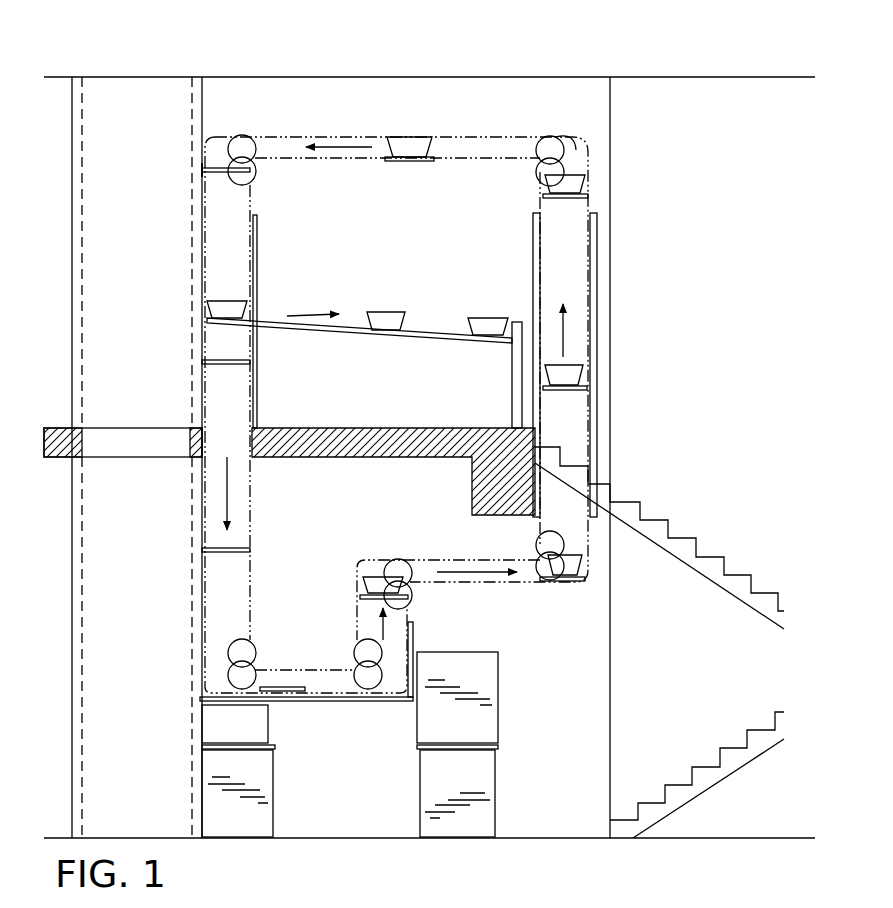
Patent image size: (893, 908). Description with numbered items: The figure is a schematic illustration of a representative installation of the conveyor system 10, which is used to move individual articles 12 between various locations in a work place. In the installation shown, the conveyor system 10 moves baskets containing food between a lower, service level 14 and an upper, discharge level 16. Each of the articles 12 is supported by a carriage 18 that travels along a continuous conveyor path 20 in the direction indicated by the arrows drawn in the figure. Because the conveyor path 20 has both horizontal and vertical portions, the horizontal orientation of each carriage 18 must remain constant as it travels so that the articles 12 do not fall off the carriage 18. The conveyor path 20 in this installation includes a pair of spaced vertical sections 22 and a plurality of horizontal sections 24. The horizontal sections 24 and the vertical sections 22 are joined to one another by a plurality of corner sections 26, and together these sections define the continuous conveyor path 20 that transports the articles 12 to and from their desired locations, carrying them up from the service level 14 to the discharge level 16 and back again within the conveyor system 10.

The conveyor system 10 is at (630, 322).
The articles 12 is at (405, 145).
The service level 14 is at (328, 700).
The discharge level 16 is at (350, 343).
The carriage 18 is at (232, 547).
The conveyor path 20 is at (481, 134).
The vertical sections 22 is at (228, 212).
The horizontal sections 24 is at (286, 140).
The corner sections 26 is at (582, 148).